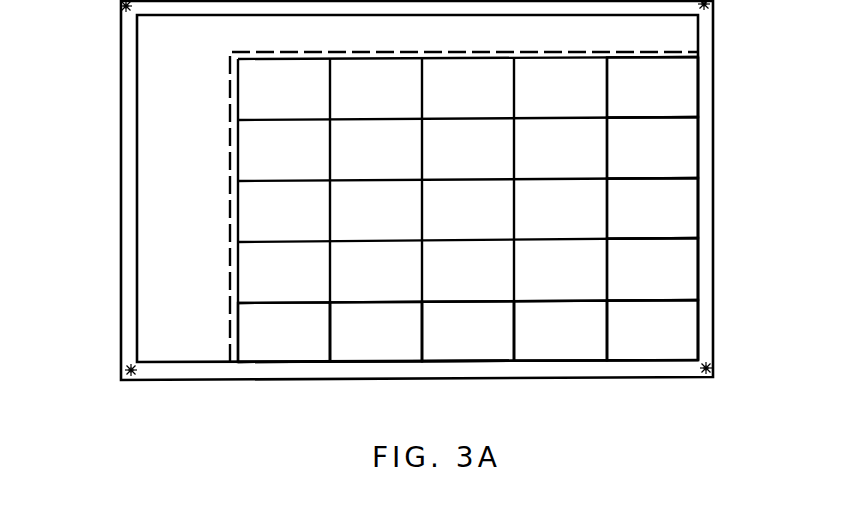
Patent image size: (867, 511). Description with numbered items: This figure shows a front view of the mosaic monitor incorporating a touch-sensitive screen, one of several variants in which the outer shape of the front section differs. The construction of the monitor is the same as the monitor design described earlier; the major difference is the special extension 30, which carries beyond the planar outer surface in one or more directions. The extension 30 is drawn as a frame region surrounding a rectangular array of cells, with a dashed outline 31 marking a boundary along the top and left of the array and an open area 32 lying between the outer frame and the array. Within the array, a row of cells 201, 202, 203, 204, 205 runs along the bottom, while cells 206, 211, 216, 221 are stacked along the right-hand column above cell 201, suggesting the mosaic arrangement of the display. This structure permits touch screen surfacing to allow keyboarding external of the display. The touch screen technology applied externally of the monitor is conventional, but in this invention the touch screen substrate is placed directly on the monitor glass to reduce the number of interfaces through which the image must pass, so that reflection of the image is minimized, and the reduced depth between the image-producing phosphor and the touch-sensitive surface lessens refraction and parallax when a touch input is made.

The special extension 30 is at (257, 151).
The dashed outline region 31 is at (263, 213).
The frame interior 32 is at (160, 306).
The cell 201 is at (645, 348).
The cell 202 is at (551, 345).
The cell 203 is at (463, 345).
The cell 204 is at (372, 345).
The cell 205 is at (270, 347).
The cell 206 is at (688, 281).
The cell 211 is at (688, 216).
The cell 216 is at (688, 161).
The cell 221 is at (690, 99).